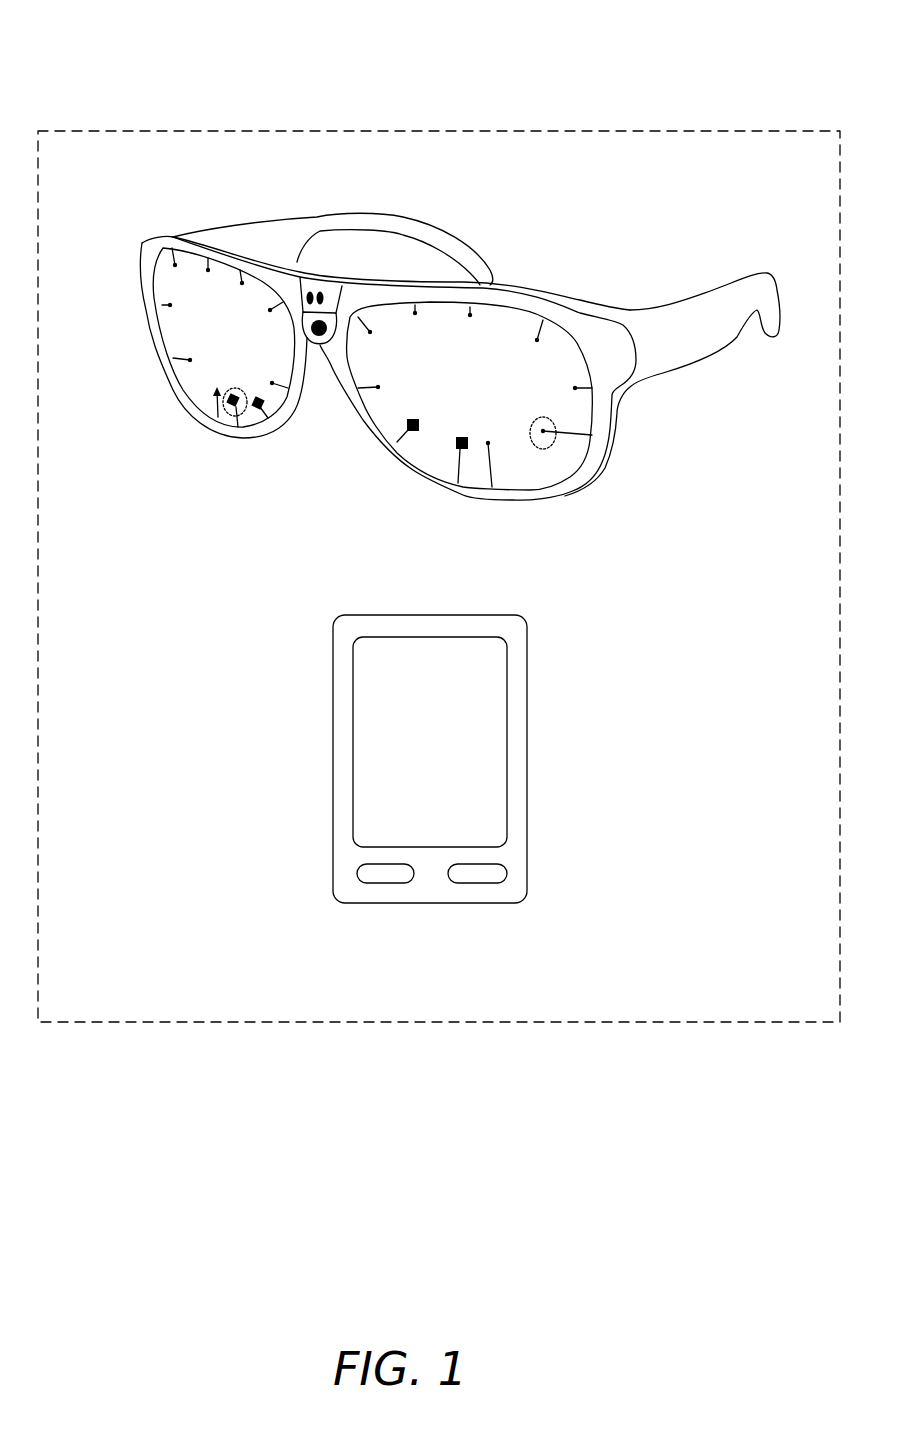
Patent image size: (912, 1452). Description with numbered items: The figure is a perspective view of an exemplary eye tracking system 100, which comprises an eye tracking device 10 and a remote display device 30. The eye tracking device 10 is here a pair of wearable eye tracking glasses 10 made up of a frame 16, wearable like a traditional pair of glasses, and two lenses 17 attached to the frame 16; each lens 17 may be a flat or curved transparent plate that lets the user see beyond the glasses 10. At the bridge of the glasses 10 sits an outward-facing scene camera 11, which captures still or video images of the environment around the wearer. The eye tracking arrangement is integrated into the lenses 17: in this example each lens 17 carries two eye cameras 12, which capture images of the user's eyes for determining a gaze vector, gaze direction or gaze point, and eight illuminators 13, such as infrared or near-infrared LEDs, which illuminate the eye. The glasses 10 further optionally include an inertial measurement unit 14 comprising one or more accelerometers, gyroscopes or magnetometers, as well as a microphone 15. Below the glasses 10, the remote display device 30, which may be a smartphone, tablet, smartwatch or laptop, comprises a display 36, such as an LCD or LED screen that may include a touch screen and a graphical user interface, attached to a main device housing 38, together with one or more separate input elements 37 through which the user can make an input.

The eye tracking system 100 is at (98, 130).
The eye tracking device 10 is at (580, 236).
The scene camera 11 is at (319, 337).
The eye camera 12 is at (226, 411).
The illuminator 13 is at (553, 423).
The inertial measurement unit 14 is at (308, 292).
The microphone 15 is at (323, 297).
The frame 16 is at (680, 337).
The lens 17 is at (480, 403).
The remote display device 30 is at (280, 751).
The display 36 is at (393, 707).
The input element 37 is at (405, 883).
The main device housing 38 is at (519, 760).